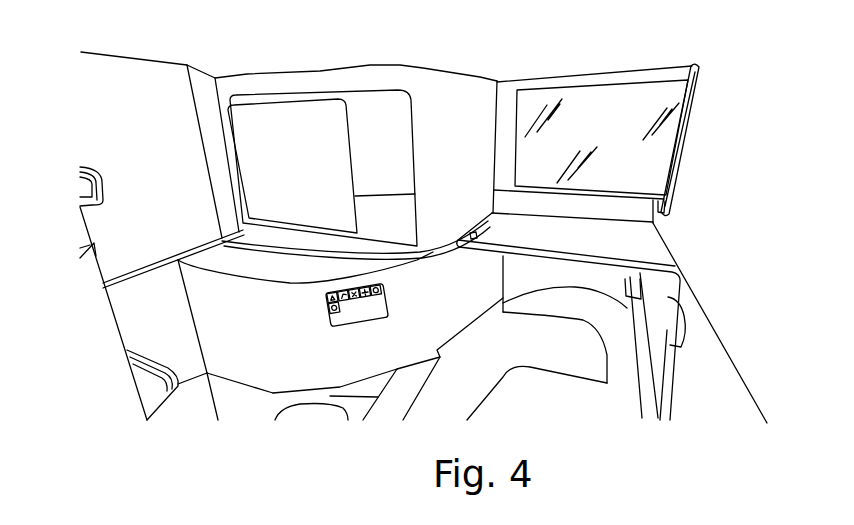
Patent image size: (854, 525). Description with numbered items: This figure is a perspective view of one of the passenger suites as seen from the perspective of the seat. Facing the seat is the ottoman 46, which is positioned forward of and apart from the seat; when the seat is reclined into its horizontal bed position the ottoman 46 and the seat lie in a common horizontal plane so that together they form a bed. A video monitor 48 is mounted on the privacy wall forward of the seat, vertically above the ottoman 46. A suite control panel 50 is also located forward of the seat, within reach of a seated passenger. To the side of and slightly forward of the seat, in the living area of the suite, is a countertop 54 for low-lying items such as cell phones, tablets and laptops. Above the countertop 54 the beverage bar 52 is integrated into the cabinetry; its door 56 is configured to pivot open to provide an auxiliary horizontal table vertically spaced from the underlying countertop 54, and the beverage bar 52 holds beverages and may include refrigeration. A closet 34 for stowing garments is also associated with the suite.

The closet 34 is at (95, 223).
The ottoman 46 is at (603, 305).
The video monitor 48 is at (660, 162).
The suite control panel 50 is at (350, 322).
The beverage bar 52 is at (317, 90).
The countertop 54 is at (268, 253).
The door 56 is at (272, 127).